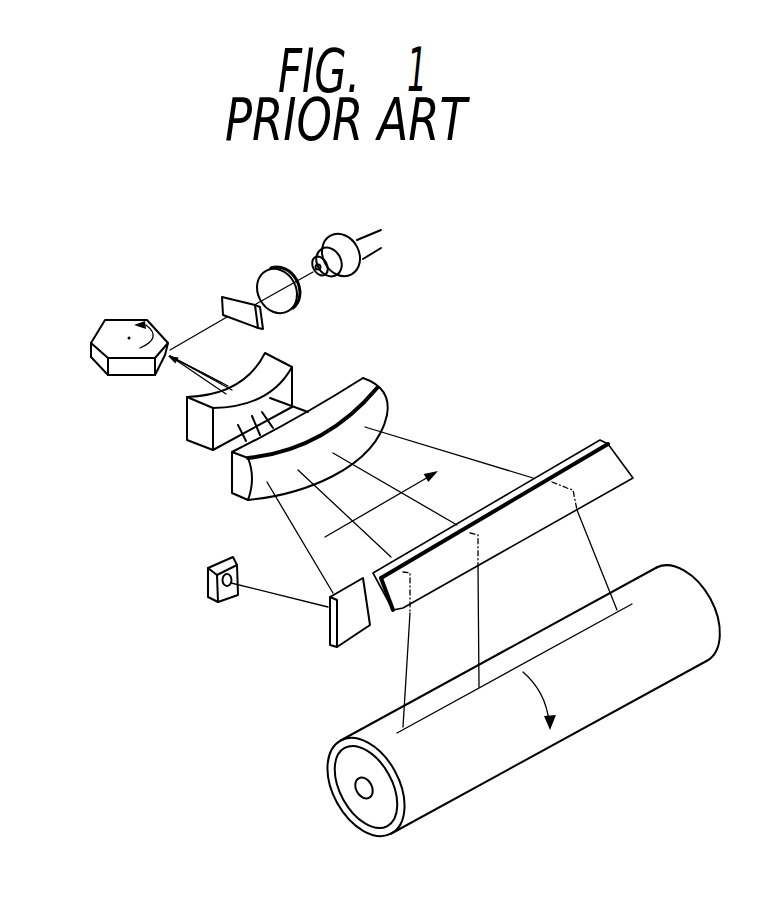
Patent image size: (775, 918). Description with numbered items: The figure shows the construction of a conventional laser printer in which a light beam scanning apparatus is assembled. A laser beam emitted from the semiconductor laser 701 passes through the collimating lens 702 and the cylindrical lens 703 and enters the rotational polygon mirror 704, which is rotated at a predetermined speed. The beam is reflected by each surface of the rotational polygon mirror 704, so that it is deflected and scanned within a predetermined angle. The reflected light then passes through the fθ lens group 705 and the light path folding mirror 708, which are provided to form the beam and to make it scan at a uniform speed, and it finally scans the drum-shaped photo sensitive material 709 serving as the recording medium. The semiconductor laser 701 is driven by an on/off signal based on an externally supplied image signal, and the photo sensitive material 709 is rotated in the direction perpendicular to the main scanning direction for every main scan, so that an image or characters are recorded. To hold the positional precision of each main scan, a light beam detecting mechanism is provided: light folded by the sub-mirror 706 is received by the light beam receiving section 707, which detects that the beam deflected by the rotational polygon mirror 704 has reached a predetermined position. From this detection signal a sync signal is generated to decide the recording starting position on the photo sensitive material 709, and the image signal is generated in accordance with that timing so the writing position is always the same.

The semiconductor laser 701 is at (342, 234).
The collimating lens 702 is at (280, 270).
The cylindrical lens 703 is at (222, 295).
The rotational polygon mirror 704 is at (147, 321).
The fθ lens group 705 is at (410, 390).
The sub-mirror 706 is at (360, 632).
The light beam receiving section 707 is at (231, 557).
The light path folding mirror 708 is at (615, 456).
The photo sensitive material 709 is at (697, 612).